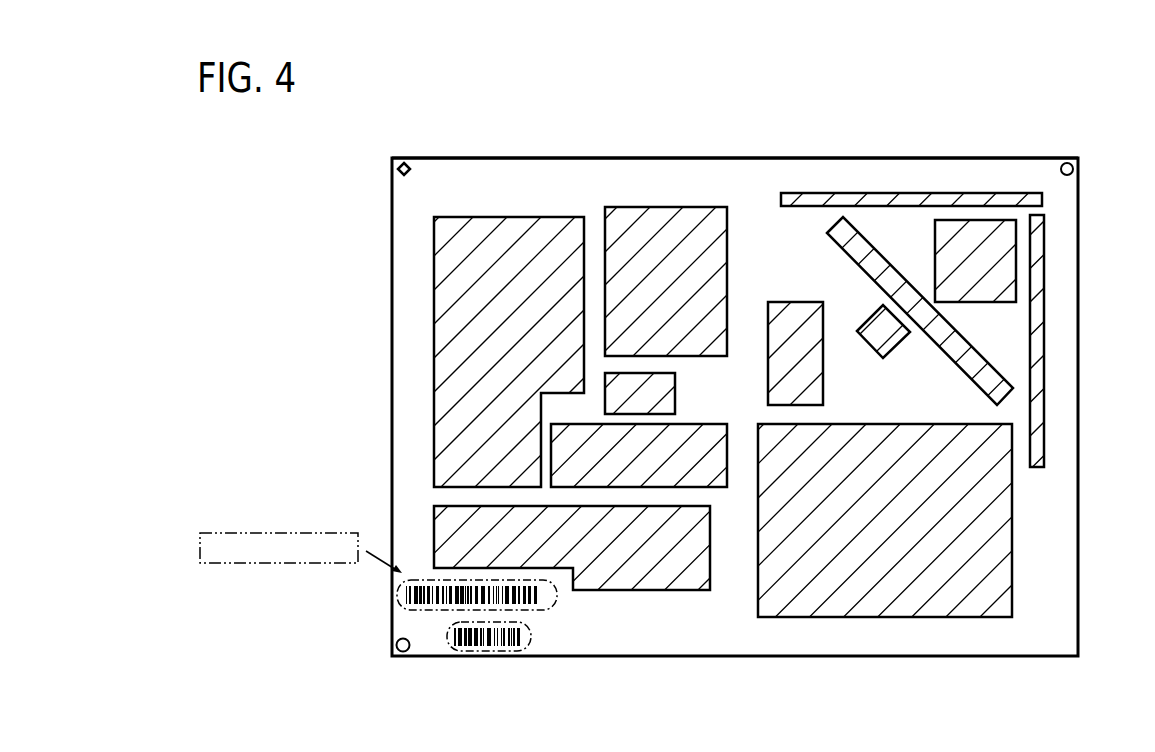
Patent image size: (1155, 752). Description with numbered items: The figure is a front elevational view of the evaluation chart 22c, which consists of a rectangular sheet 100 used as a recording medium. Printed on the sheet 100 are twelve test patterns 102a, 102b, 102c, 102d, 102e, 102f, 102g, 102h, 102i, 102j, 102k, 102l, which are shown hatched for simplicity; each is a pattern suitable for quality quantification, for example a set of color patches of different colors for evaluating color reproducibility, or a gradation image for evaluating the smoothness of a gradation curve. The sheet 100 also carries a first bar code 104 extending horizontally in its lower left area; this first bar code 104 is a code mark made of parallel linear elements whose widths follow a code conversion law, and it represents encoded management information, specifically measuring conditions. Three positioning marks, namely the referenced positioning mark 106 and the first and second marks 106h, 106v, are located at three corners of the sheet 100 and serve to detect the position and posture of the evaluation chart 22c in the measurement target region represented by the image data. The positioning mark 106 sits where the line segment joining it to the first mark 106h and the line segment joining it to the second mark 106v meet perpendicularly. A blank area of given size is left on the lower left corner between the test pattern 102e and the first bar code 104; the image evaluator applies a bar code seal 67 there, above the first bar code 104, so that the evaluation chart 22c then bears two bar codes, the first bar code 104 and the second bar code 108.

The sheet 100 is at (890, 163).
The evaluation chart 22c is at (768, 157).
The positioning mark 106 is at (405, 163).
The first mark 106h is at (1071, 163).
The second mark 106v is at (407, 652).
The test pattern 102a is at (481, 226).
The test pattern 102b is at (633, 215).
The test pattern 102c is at (662, 383).
The test pattern 102d is at (688, 432).
The test pattern 102e is at (637, 582).
The test pattern 102f is at (808, 201).
The test pattern 102g is at (1045, 297).
The test pattern 102h is at (938, 256).
The test pattern 102i is at (860, 252).
The test pattern 102j is at (897, 336).
The test pattern 102k is at (816, 366).
The test pattern 102l is at (993, 543).
The bar code seal 67 is at (233, 533).
The second bar code 108 is at (399, 600).
The first bar code 104 is at (530, 640).